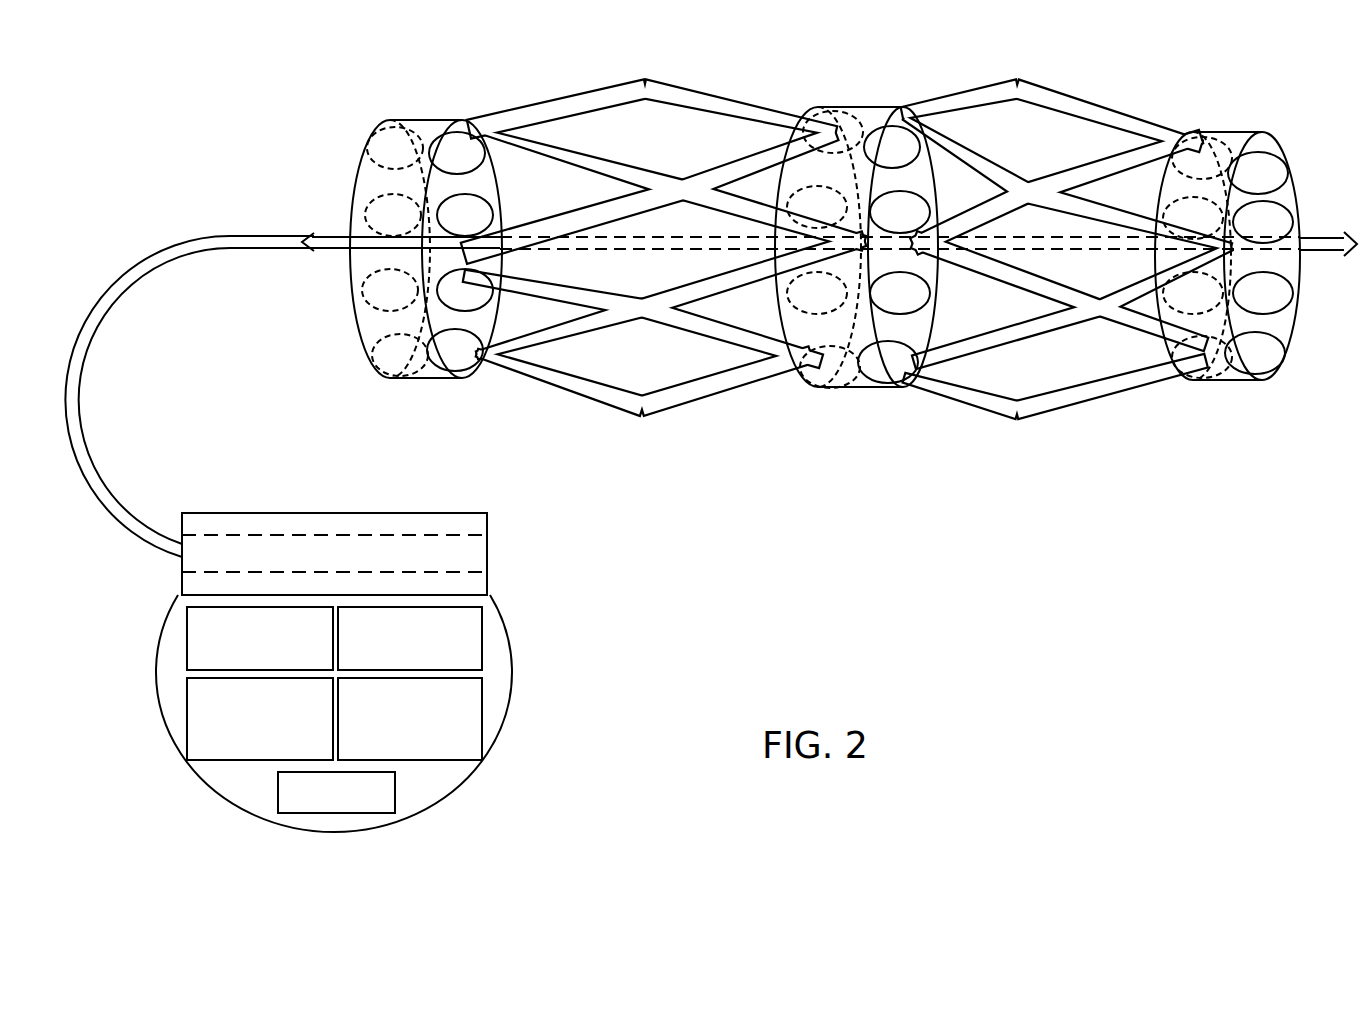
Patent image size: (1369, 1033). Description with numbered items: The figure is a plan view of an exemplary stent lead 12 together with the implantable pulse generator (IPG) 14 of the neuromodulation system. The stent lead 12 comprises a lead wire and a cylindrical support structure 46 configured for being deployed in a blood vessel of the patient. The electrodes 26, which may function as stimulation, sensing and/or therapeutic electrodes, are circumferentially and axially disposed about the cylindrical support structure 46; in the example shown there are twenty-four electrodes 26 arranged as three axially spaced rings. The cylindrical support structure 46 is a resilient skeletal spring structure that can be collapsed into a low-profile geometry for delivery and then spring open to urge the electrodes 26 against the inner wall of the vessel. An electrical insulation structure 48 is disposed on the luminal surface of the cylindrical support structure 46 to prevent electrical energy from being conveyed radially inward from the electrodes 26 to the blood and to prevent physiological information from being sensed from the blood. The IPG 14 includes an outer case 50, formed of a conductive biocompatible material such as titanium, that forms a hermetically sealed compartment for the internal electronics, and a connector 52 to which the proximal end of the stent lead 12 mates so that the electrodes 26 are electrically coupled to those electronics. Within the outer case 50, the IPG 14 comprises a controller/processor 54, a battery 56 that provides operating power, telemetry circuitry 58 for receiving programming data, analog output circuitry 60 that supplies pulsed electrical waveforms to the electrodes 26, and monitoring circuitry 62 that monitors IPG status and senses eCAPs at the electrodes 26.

The stent lead 12 is at (701, 50).
The implantable pulse generator 14 is at (364, 505).
The electrodes 26 is at (448, 375).
The cylindrical support structure 46 is at (1075, 97).
The electrical insulation structure 48 is at (862, 107).
The outer case 50 is at (165, 742).
The connector 52 is at (228, 536).
The controller/processor 54 is at (187, 642).
The battery 56 is at (396, 800).
The telemetry circuitry 58 is at (483, 636).
The analog output circuitry 60 is at (228, 762).
The monitoring circuitry 62 is at (483, 725).